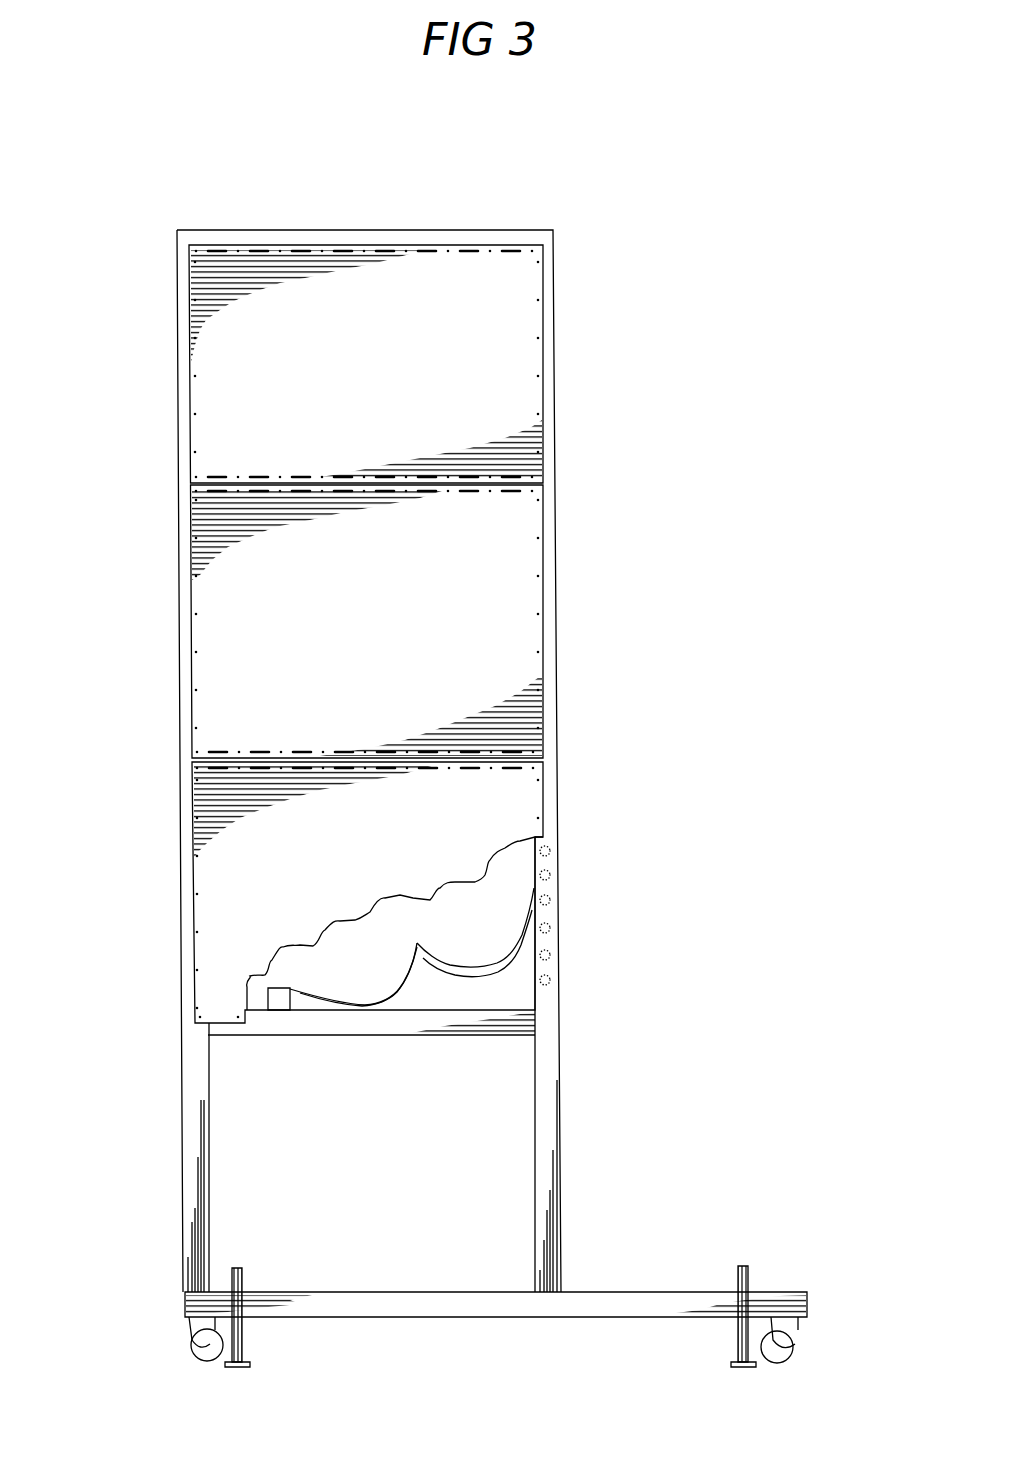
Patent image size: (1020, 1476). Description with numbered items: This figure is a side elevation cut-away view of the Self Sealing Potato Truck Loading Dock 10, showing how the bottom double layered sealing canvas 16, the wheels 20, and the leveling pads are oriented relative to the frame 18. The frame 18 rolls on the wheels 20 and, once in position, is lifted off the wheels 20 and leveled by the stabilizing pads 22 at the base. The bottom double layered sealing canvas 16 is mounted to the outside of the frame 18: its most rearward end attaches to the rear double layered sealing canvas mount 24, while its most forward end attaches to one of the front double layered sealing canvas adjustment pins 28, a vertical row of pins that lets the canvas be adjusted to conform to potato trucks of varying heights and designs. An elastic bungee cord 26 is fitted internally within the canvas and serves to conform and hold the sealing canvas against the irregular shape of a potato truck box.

The Self Sealing Potato Truck Loading Dock 10 is at (414, 371).
The bottom double layered sealing canvas 16 is at (418, 978).
The frame 18 is at (557, 535).
The wheels 20 is at (772, 1347).
The stabilizing pads 22 is at (248, 1361).
The rear double layered sealing canvas mount 24 is at (258, 988).
The elastic bungee cord 26 is at (416, 942).
The front double layered sealing canvas adjustment pins 28 is at (552, 968).